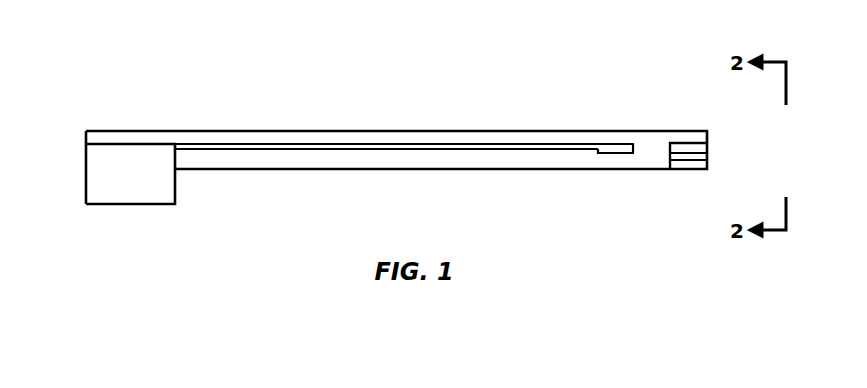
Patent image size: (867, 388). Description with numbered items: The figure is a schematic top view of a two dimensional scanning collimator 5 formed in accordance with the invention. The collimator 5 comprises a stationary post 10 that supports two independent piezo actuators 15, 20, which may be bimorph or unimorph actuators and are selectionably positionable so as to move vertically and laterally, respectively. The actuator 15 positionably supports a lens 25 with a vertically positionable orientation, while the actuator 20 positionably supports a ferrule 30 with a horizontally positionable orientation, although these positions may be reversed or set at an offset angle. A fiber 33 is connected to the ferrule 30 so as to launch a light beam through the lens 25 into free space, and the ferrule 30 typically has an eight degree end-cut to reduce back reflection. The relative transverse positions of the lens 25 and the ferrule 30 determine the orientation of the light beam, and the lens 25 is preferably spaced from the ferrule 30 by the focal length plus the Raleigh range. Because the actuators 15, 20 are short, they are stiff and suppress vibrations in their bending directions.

The two dimensional scanning collimator 5 is at (135, 78).
The stationary post 10 is at (130, 188).
The piezo actuator 15 is at (656, 139).
The piezo actuator 20 is at (540, 147).
The lens 25 is at (700, 157).
The ferrule 30 is at (618, 154).
The fiber 33 is at (492, 152).